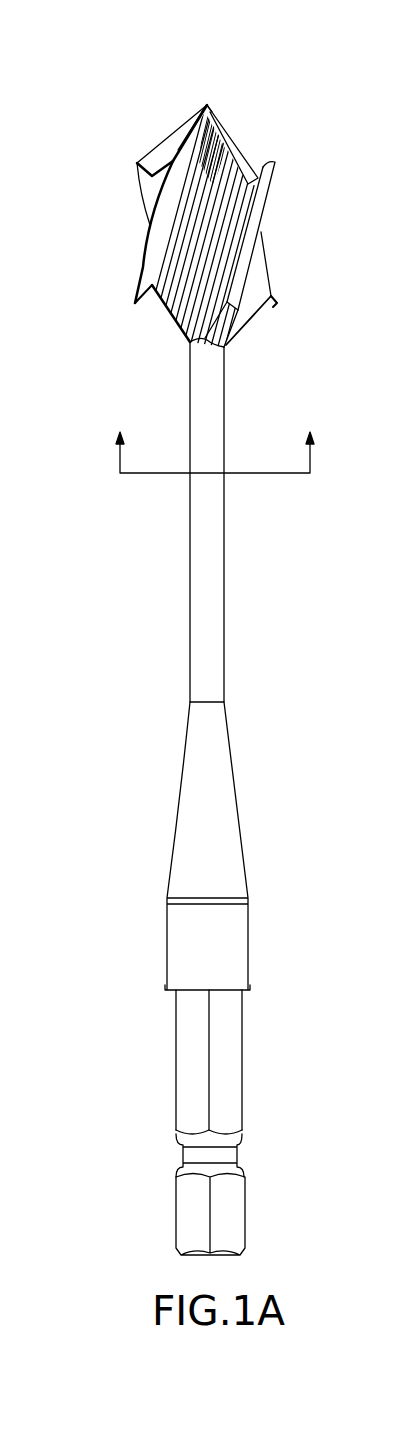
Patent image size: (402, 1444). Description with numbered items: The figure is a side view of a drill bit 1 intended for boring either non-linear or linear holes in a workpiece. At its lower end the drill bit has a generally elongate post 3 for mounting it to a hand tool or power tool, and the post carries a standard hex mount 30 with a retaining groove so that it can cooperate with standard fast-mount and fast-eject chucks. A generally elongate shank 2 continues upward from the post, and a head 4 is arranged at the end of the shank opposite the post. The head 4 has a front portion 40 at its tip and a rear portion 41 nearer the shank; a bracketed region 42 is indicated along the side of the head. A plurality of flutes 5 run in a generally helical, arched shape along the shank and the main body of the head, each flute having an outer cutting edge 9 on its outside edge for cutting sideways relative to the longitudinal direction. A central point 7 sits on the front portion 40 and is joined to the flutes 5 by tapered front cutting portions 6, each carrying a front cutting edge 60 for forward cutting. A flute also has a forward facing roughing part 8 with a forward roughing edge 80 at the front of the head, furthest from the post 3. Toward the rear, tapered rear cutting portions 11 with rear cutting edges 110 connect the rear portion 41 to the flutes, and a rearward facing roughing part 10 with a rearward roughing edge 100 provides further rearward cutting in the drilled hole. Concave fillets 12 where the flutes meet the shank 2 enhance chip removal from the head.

The drill bit 1 is at (147, 735).
The shank 2 is at (212, 543).
The post 3 is at (212, 948).
The hex mount 30 is at (230, 1083).
The head 4 is at (202, 210).
The flutes 5 is at (258, 282).
The tapered front cutting portions 6 is at (180, 127).
The central point 7 is at (210, 103).
The forward facing roughing part 8 is at (275, 160).
The outer cutting edge 9 is at (258, 218).
The rearward facing roughing part 10 is at (277, 303).
The tapered rear cutting portions 11 is at (237, 322).
The concave fillets 12 is at (175, 316).
The front portion 40 is at (205, 82).
The rear portion 41 is at (144, 302).
The side cutting region 42 is at (92, 315).
The front cutting edge 60 is at (233, 137).
The forward roughing edge 80 is at (152, 173).
The rearward roughing edge 100 is at (270, 302).
The rear cutting edge 110 is at (230, 347).